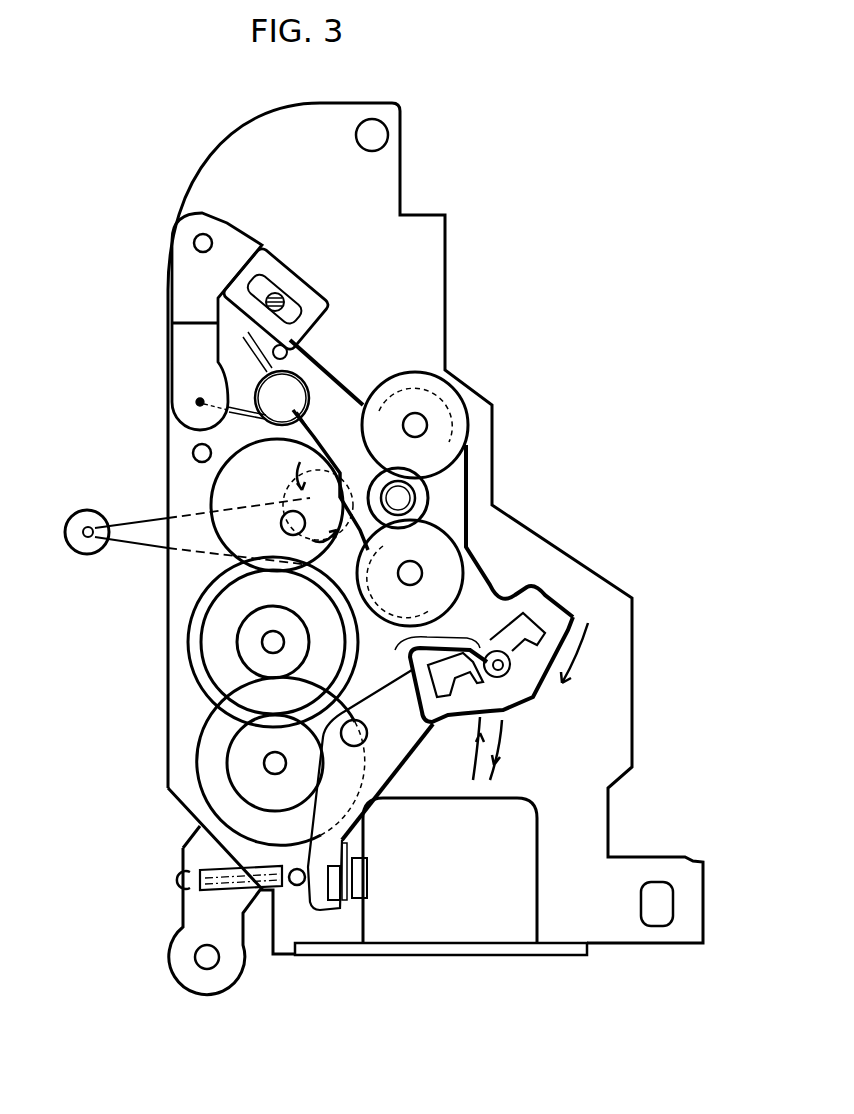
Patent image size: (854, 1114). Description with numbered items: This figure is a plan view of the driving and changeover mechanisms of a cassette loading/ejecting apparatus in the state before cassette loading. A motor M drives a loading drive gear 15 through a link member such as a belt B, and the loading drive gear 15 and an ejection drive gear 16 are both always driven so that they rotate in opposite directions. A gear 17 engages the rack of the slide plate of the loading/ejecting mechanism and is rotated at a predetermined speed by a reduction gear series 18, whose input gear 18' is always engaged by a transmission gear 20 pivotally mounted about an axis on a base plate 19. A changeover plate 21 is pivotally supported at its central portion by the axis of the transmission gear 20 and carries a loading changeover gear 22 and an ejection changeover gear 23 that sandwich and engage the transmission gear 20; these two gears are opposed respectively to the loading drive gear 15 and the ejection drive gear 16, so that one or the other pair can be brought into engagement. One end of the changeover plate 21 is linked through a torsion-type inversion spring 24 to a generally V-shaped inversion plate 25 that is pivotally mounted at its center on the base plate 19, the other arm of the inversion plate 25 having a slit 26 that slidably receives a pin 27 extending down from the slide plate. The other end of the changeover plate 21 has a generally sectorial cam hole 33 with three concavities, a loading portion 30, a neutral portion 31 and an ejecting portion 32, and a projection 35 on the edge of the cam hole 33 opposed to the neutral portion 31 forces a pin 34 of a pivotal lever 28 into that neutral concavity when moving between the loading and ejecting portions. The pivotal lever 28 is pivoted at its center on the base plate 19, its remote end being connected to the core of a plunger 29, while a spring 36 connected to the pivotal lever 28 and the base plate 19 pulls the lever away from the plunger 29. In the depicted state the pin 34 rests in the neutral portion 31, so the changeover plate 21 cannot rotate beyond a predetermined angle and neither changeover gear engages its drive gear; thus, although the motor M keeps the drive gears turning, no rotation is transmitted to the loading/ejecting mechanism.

The loading drive gear 15 is at (287, 543).
The ejection drive gear 16 is at (287, 485).
The gear 17 is at (248, 625).
The reduction gear series 18 is at (266, 761).
The input gear 18' is at (199, 470).
The base plate 19 is at (430, 262).
The transmission gear 20 is at (430, 495).
The changeover plate 21 is at (477, 590).
The loading changeover gear 22 is at (447, 570).
The ejection changeover gear 23 is at (450, 443).
The inversion spring 24 is at (307, 373).
The inversion plate 25 is at (237, 235).
The slit 26 is at (273, 287).
The pin 27 is at (288, 300).
The pivotal lever 28 is at (345, 900).
The plunger 29 is at (462, 940).
The loading portion 30 is at (567, 623).
The neutral portion 31 is at (510, 662).
The ejecting portion 32 is at (462, 690).
The cam hole 33 is at (527, 623).
The pin 34 is at (530, 695).
The projection 35 is at (412, 640).
The spring 36 is at (225, 882).
The belt B is at (138, 518).
The motor M is at (87, 553).